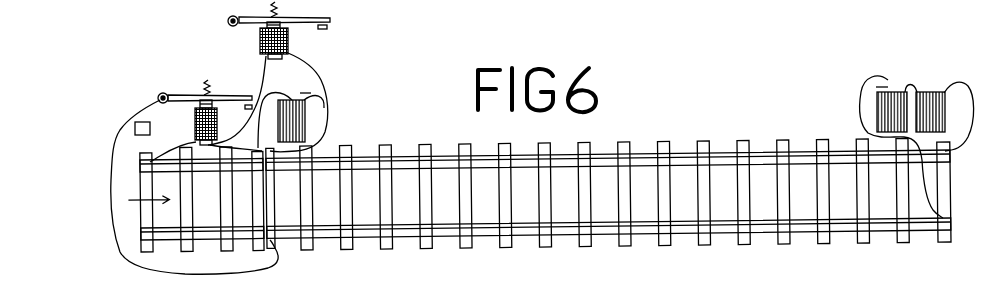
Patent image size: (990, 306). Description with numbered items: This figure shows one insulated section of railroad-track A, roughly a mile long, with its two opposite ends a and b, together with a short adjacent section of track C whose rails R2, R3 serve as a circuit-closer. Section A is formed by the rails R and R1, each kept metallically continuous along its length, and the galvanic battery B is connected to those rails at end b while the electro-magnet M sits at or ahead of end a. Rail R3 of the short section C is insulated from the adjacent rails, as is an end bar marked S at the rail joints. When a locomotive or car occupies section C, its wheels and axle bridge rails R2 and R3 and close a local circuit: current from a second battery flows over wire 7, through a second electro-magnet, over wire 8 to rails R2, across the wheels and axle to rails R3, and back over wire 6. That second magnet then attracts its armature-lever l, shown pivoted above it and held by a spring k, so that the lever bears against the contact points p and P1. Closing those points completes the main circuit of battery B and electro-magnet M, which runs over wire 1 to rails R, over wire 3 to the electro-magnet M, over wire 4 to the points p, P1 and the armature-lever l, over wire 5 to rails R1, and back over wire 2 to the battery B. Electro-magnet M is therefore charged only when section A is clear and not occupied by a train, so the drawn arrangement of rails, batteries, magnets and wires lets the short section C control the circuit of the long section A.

The wire 1 is at (964, 116).
The wire 2 is at (605, 147).
The wire 3 is at (303, 102).
The wire 4 is at (237, 100).
The wire 5 is at (187, 195).
The wire 6 is at (252, 220).
The wire 7 is at (236, 132).
The wire 8 is at (173, 149).
The electro-magnet M is at (244, 80).
The galvanic battery B is at (606, 101).
The armature-lever l is at (220, 48).
The spring k is at (247, 48).
The contact point p is at (243, 101).
The contact point P1 is at (142, 137).
The signal-operating magnet S is at (545, 195).
The section of track C is at (195, 214).
The insulated section of railroad-track A is at (604, 195).
The rail R is at (608, 153).
The rail R1 is at (609, 237).
The rail R2 is at (201, 158).
The rail R3 is at (202, 242).
The end of section a is at (281, 200).
The end of section b is at (961, 192).